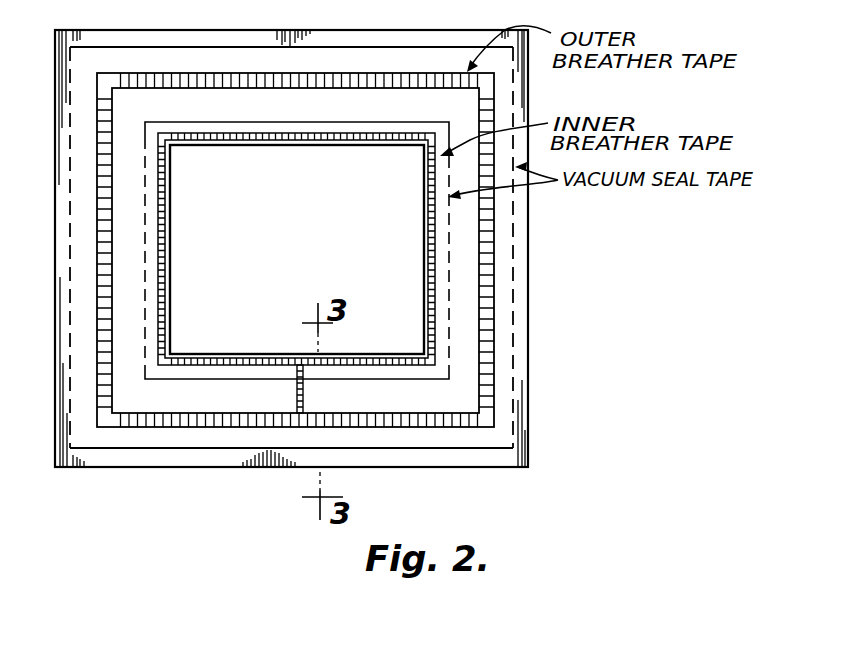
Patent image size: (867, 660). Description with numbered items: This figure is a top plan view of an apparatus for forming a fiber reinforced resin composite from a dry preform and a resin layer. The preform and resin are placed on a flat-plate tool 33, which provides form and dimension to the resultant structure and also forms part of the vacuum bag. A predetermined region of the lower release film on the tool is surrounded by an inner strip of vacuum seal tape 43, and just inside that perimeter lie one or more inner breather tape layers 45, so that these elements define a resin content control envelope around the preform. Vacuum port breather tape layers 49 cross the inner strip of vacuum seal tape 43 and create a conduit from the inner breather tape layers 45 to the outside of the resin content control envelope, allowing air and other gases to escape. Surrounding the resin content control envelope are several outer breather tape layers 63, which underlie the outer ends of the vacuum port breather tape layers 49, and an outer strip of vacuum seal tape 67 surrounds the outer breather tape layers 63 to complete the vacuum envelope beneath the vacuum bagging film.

The tool 33 is at (530, 418).
The inner strip of vacuum seal tape 43 is at (449, 217).
The inner breather tape layers 45 is at (434, 268).
The vacuum port breather tape layers 49 is at (297, 398).
The outer breather tape layers 63 is at (493, 336).
The outer strip of vacuum seal tape 67 is at (517, 287).